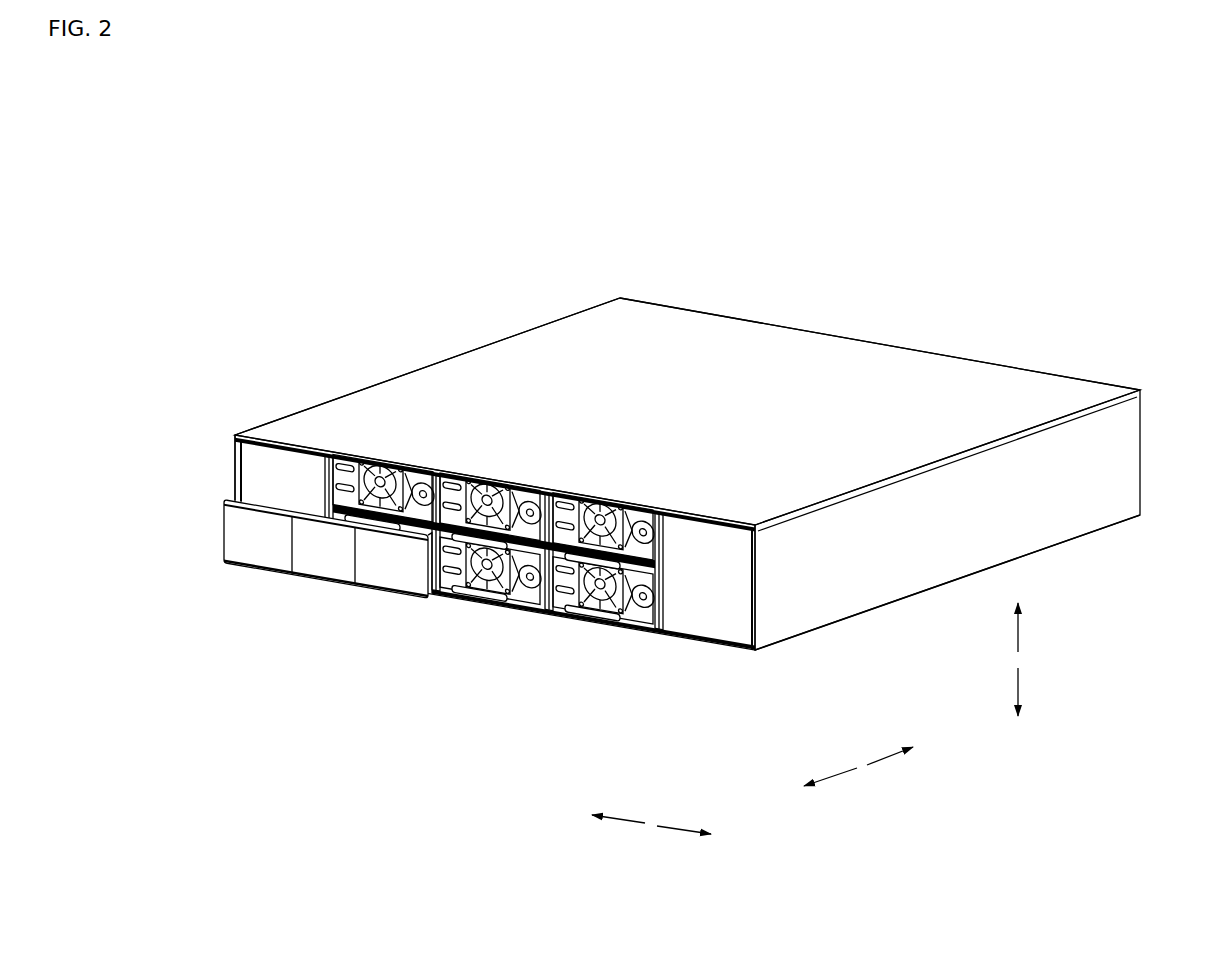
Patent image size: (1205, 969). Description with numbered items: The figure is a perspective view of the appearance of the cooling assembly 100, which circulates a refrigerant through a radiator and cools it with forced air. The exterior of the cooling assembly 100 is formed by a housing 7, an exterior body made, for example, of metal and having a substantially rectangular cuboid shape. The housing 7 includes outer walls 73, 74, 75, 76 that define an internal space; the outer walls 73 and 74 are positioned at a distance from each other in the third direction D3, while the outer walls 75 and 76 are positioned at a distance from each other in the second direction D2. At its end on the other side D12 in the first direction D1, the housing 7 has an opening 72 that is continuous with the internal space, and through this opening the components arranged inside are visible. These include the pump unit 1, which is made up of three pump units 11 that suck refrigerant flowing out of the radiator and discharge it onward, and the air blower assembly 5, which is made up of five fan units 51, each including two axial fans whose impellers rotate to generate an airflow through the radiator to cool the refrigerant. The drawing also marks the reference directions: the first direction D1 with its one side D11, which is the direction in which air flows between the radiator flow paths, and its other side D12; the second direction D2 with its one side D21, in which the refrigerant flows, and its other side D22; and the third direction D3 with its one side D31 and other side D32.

The cooling assembly 100 is at (706, 453).
The housing 7 is at (711, 400).
The opening 72 is at (846, 324).
The outer wall 73 is at (895, 378).
The outer wall 74 is at (1107, 530).
The outer wall 75 is at (589, 307).
The outer wall 76 is at (1058, 450).
The pump unit 1 is at (328, 609).
The pump unit 11 is at (382, 684).
The air blower assembly 5 is at (494, 624).
The fan unit 51 is at (375, 486).
The first direction D1 is at (856, 827).
The one side in the first direction D11 is at (838, 773).
The other side in the first direction D12 is at (888, 762).
The second direction D2 is at (651, 877).
The one side in the second direction D21 is at (622, 820).
The other side in the second direction D22 is at (683, 864).
The third direction D3 is at (1090, 659).
The one side in the third direction D31 is at (1020, 635).
The other side in the third direction D32 is at (1066, 692).